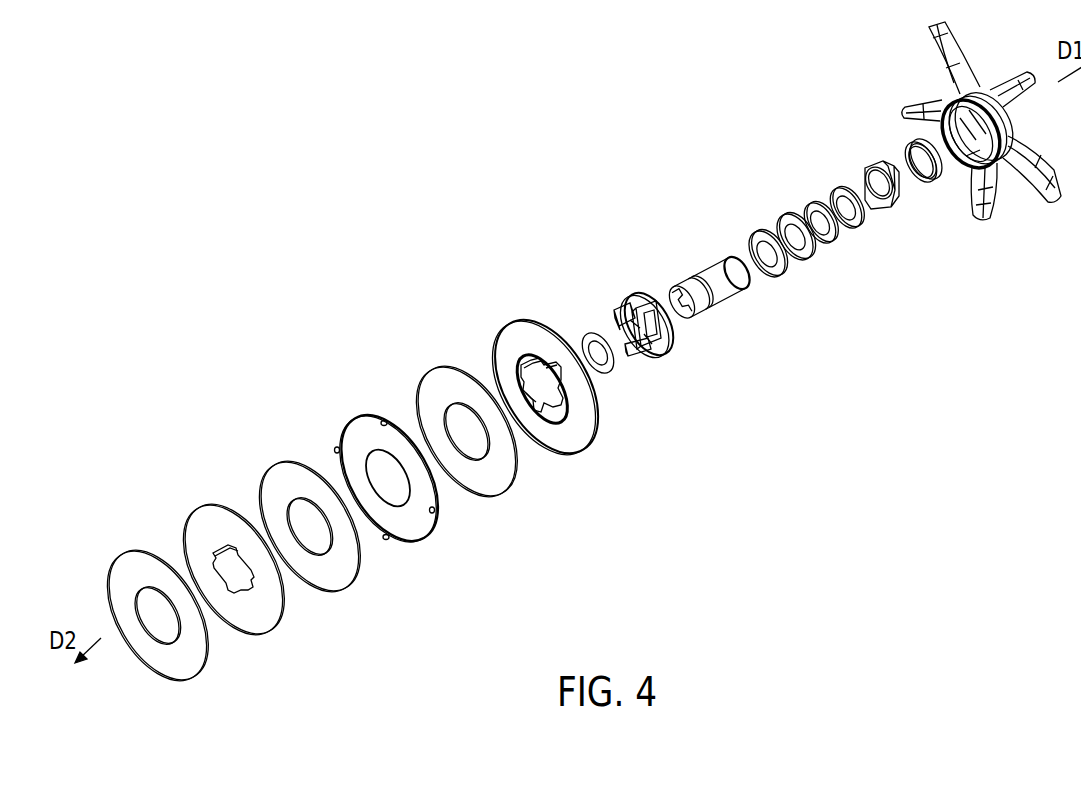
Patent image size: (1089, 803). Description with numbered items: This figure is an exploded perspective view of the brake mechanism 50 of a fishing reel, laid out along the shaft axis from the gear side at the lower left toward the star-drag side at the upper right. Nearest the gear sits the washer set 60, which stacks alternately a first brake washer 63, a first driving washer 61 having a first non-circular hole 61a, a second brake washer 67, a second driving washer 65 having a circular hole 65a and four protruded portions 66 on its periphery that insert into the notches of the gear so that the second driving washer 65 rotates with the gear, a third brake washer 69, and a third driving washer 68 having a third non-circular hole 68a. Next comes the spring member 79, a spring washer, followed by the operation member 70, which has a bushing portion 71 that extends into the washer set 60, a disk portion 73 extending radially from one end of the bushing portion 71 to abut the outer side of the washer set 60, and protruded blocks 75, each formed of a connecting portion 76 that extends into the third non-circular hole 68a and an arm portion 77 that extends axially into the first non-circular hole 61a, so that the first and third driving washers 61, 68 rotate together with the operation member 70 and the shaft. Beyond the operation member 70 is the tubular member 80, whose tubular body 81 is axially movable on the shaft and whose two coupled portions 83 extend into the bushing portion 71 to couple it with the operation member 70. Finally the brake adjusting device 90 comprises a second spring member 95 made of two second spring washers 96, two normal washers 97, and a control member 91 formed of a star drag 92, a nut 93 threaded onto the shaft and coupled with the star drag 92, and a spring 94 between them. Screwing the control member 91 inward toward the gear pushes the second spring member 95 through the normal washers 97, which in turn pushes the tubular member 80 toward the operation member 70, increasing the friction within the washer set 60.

The brake mechanism 50 is at (858, 477).
The washer set 60 is at (485, 272).
The first driving washer 61 is at (207, 520).
The first non-circular hole 61a is at (232, 598).
The first brake washer 63 is at (132, 567).
The second driving washer 65 is at (358, 432).
The circular hole 65a is at (408, 500).
The protruded portions 66 is at (385, 542).
The second brake washer 67 is at (278, 475).
The third driving washer 68 is at (513, 345).
The third non-circular hole 68a is at (540, 420).
The third brake washer 69 is at (433, 388).
The operation member 70 is at (612, 183).
The bushing portion 71 is at (630, 300).
The disk portion 73 is at (637, 297).
The protruded blocks 75 is at (583, 261).
The connecting portion 76 is at (618, 311).
The arm portion 77 is at (626, 342).
The spring member 79 is at (608, 373).
The tubular member 80 is at (646, 241).
The tubular body 81 is at (711, 278).
The coupled portions 83 is at (685, 288).
The brake adjusting device 90 is at (860, 47).
The control member 91 is at (927, 60).
The star drag 92 is at (959, 92).
The nut 93 is at (870, 169).
The spring 94 is at (907, 146).
The second spring member 95 is at (757, 165).
The second spring washers 96 is at (752, 238).
The normal washers 97 is at (833, 192).